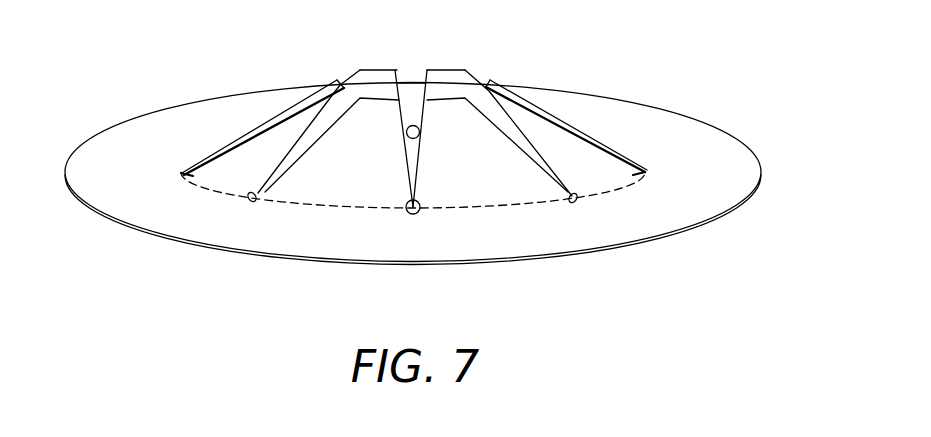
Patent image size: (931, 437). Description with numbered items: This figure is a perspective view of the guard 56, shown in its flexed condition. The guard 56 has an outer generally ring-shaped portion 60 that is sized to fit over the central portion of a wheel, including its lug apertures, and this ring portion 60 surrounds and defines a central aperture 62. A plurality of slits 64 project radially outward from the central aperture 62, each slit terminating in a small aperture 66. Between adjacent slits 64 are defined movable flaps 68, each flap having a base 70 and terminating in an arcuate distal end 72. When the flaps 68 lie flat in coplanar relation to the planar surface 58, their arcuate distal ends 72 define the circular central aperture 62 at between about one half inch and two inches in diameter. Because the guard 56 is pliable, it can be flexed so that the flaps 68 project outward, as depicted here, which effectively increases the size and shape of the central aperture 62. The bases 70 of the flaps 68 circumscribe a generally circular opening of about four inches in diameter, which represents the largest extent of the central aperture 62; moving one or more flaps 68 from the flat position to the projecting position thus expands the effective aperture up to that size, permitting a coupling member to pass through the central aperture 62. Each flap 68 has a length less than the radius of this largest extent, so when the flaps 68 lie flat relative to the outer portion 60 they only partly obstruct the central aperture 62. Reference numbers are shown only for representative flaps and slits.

The guard 56 is at (441, 174).
The planar surface 58 is at (690, 164).
The outer generally ring-shaped portion 60 is at (108, 134).
The central aperture 62 is at (448, 80).
The slits 64 is at (250, 195).
The aperture 66 is at (250, 198).
The flaps 68 is at (259, 150).
The base 70 is at (182, 174).
The arcuate distal end 72 is at (339, 80).